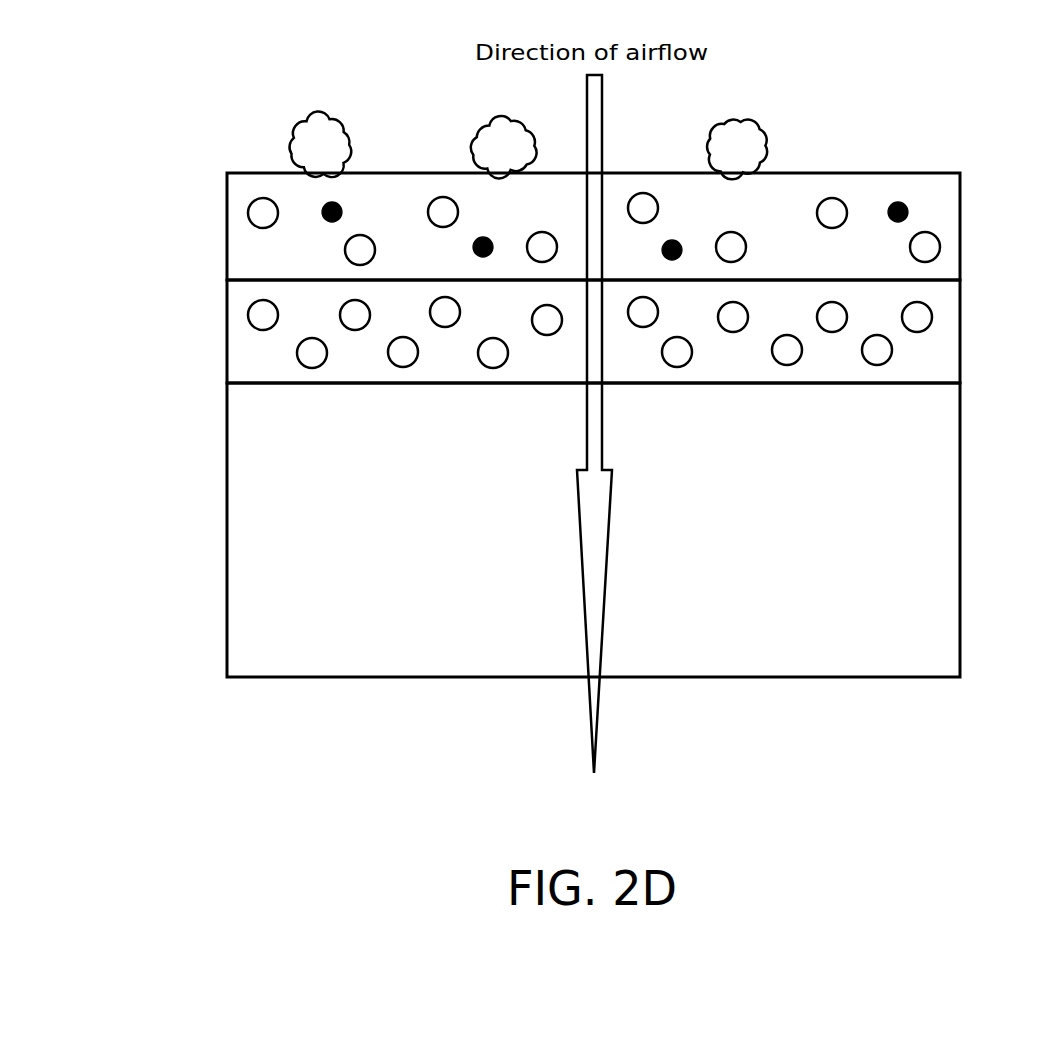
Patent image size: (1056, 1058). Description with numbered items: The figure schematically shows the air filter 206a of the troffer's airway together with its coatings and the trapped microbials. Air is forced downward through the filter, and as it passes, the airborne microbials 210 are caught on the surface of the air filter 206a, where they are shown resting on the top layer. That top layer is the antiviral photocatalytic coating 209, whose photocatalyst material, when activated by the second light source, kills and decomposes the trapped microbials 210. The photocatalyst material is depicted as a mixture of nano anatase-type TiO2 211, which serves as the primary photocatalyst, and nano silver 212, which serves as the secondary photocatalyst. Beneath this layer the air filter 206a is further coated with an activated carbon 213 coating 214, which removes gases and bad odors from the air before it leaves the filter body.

The air filter 206a is at (227, 470).
The antiviral photocatalytic coating 209 is at (227, 240).
The airborne microbials 210 is at (765, 130).
The nano anatase-type TiO2 211 is at (940, 243).
The nano silver 212 is at (907, 207).
The activated carbon 213 is at (933, 313).
The activated carbon coating 214 is at (227, 340).